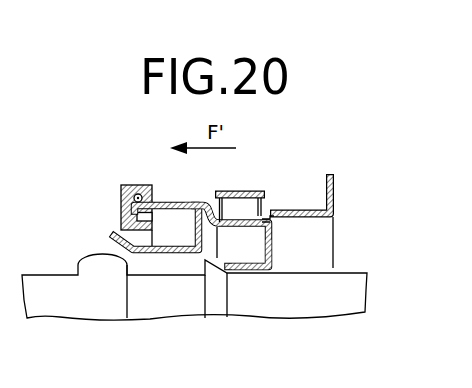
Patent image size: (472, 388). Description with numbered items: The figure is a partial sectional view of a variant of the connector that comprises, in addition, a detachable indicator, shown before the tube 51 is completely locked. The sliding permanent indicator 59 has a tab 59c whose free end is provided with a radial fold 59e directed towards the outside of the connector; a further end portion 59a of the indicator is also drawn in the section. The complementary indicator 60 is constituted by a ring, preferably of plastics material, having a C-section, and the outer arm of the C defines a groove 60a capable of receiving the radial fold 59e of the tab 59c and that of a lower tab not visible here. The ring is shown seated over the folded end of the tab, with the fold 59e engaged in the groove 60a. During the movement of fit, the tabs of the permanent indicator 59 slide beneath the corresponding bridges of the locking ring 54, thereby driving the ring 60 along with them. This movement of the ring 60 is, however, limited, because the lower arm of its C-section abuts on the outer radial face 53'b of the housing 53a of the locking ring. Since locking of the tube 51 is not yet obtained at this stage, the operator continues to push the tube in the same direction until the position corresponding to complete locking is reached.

The tube 51 is at (57, 302).
The housing of the locking ring 53a is at (314, 233).
The outer radial face 53'b is at (156, 283).
The locking ring 54 is at (267, 194).
The sliding permanent indicator 59 is at (282, 248).
The bent end portion 59a is at (278, 256).
The tab 59c is at (180, 204).
The radial fold 59e is at (122, 203).
The complementary indicator 60 is at (128, 184).
The groove 60a is at (122, 217).